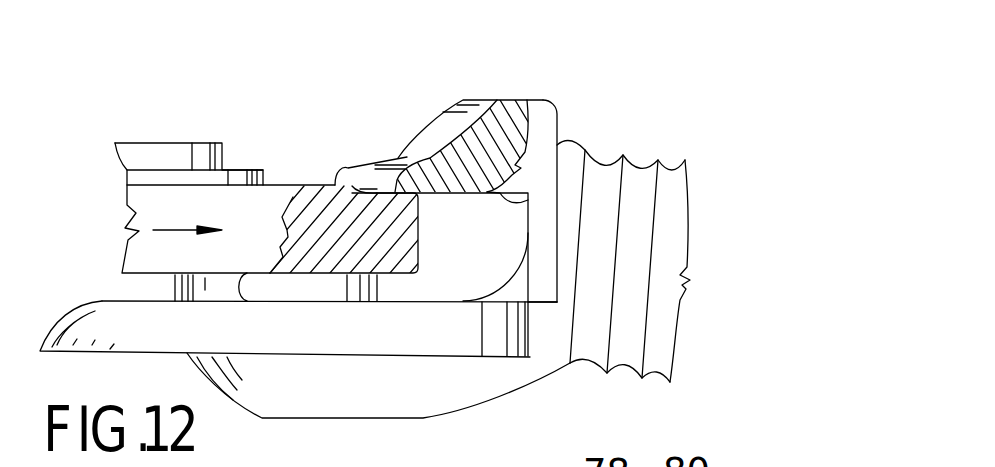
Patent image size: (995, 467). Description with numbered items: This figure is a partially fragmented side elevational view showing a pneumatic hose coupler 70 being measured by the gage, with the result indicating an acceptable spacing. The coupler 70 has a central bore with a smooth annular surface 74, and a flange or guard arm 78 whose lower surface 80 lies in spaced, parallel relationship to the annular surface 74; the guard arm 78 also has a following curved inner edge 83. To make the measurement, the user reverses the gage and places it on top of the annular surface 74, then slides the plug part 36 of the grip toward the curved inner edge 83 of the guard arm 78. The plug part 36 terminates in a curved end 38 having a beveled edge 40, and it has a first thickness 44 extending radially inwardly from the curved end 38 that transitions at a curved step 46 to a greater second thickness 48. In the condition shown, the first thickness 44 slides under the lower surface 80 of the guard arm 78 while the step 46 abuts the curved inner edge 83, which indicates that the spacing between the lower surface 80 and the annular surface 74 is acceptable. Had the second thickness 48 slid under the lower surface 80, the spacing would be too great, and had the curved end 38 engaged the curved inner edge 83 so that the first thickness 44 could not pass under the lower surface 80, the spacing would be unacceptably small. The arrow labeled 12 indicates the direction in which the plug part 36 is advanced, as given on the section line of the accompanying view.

The pipe body 12 is at (116, 199).
The plug part 36 is at (283, 198).
The curved end 38 is at (422, 243).
The beveled edge 40 is at (418, 273).
The first thickness 44 is at (423, 207).
The curved step 46 is at (350, 177).
The second thickness 48 is at (348, 223).
The pneumatic hose coupler 70 is at (637, 155).
The annular surface 74 is at (253, 303).
The guard arm 78 is at (500, 100).
The lower surface 80 is at (520, 203).
The curved inner edge 83 is at (388, 180).